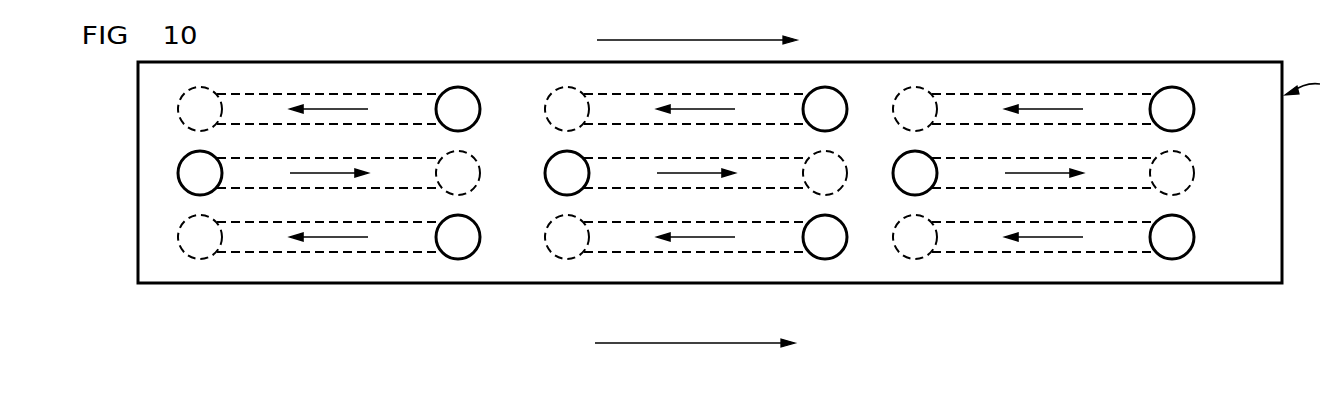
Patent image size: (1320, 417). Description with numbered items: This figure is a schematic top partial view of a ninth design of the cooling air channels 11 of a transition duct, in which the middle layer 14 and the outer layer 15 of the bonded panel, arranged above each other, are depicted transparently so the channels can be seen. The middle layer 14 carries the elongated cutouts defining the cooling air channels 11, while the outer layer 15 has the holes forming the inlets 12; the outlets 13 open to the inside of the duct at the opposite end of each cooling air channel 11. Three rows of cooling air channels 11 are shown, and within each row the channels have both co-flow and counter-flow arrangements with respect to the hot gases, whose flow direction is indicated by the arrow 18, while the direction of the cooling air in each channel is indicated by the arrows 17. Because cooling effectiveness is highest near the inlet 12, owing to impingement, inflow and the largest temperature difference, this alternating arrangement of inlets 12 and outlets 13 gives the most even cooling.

The cooling air channel 11 is at (686, 173).
The inlet 12 is at (1238, 240).
The outlet 13 is at (1238, 176).
The middle layer 14 is at (714, 166).
The outer layer 15 is at (1228, 0).
The arrows representing cooling air flow direction 17 is at (674, 173).
The arrow representing hot gas flow direction 18 is at (685, 40).